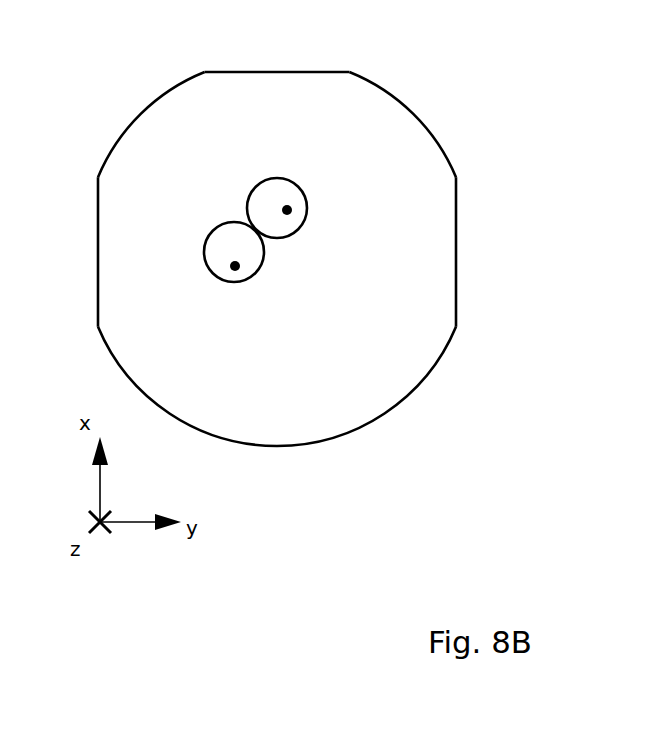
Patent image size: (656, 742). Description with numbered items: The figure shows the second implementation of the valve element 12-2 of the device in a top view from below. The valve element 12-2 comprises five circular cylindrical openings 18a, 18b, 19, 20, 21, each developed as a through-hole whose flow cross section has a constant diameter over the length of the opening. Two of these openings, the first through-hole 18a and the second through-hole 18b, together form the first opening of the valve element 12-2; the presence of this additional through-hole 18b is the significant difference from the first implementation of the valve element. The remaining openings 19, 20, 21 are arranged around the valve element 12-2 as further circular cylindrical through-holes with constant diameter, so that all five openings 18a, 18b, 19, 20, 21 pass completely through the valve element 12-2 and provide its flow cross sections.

The valve element 12-2 is at (440, 93).
The first through-hole 18a is at (235, 266).
The second through-hole 18b is at (287, 210).
The opening 19 is at (458, 220).
The opening 20 is at (293, 72).
The opening 21 is at (97, 277).